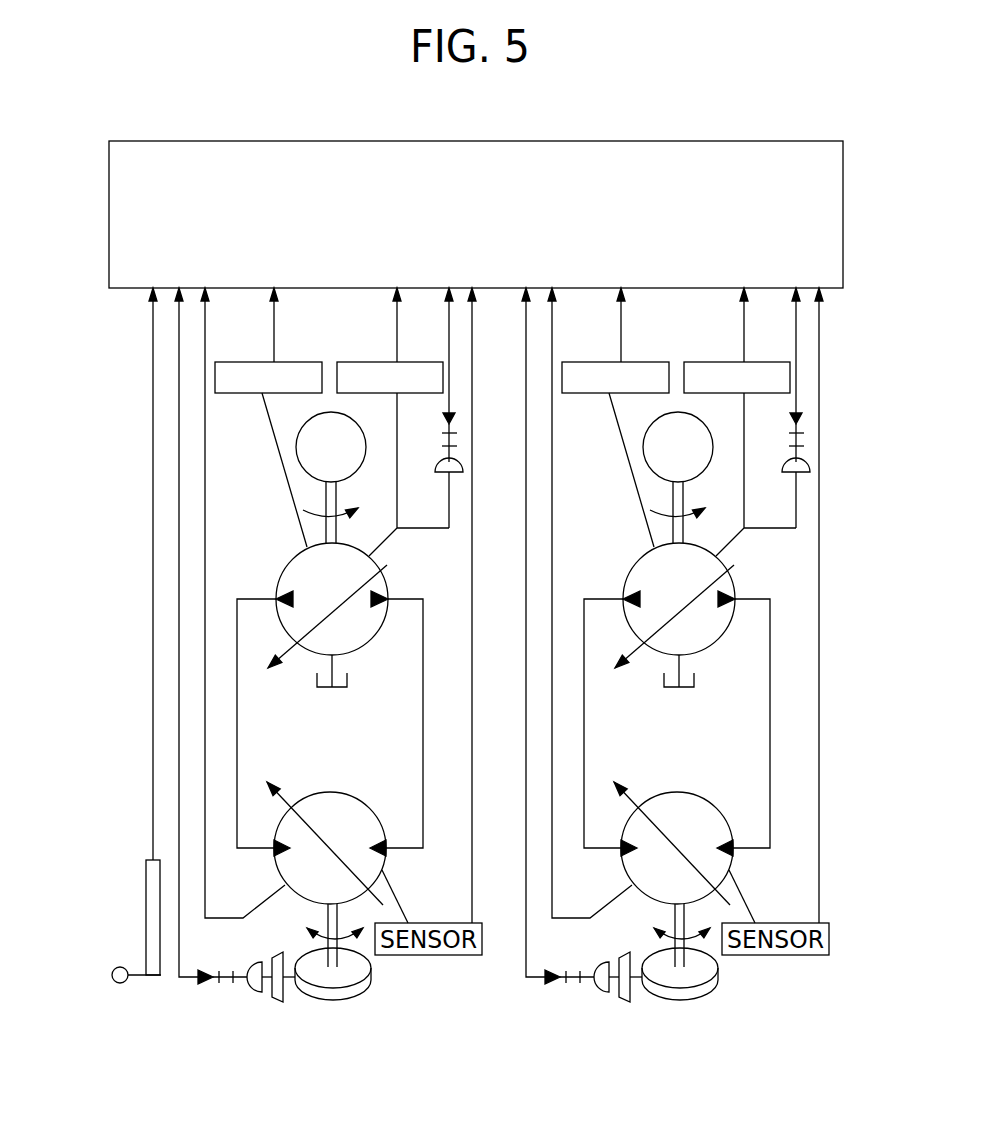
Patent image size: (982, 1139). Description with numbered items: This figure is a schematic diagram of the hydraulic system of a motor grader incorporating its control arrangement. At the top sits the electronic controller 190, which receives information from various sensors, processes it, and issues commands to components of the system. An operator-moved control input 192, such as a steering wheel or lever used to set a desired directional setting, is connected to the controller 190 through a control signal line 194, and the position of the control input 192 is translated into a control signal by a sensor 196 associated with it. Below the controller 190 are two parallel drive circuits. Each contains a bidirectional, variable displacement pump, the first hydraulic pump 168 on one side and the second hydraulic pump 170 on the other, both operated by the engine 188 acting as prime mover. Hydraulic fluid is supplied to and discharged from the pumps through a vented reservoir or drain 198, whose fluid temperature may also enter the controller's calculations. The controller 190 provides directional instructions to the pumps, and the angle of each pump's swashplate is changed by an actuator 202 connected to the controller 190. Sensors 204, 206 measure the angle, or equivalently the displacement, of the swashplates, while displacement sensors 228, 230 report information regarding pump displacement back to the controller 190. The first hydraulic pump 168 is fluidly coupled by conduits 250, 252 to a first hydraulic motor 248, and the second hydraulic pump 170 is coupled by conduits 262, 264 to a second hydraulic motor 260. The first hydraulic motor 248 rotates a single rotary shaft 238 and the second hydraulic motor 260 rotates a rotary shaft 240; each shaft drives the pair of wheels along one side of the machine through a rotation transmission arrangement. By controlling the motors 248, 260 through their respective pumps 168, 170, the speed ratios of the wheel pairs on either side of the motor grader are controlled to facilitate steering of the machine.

The electronic controller 190 is at (617, 160).
The control signal line 194 is at (153, 761).
The sensor 196 is at (146, 908).
The control input 192 is at (120, 983).
The displacement sensor 228 is at (288, 362).
The displacement sensor 230 is at (636, 417).
The sensor 204 is at (377, 362).
The sensor 206 is at (443, 474).
The actuator 202 is at (780, 408).
The engine 188 is at (306, 426).
The first hydraulic pump 168 is at (385, 572).
The second hydraulic pump 170 is at (711, 605).
The reservoir 198 is at (342, 688).
The conduit 252 is at (237, 702).
The conduit 264 is at (630, 723).
The conduit 250 is at (423, 742).
The conduit 262 is at (722, 723).
The first hydraulic motor 248 is at (325, 792).
The second hydraulic motor 260 is at (663, 858).
The rotary shaft 238 is at (337, 960).
The rotary shaft 240 is at (724, 987).